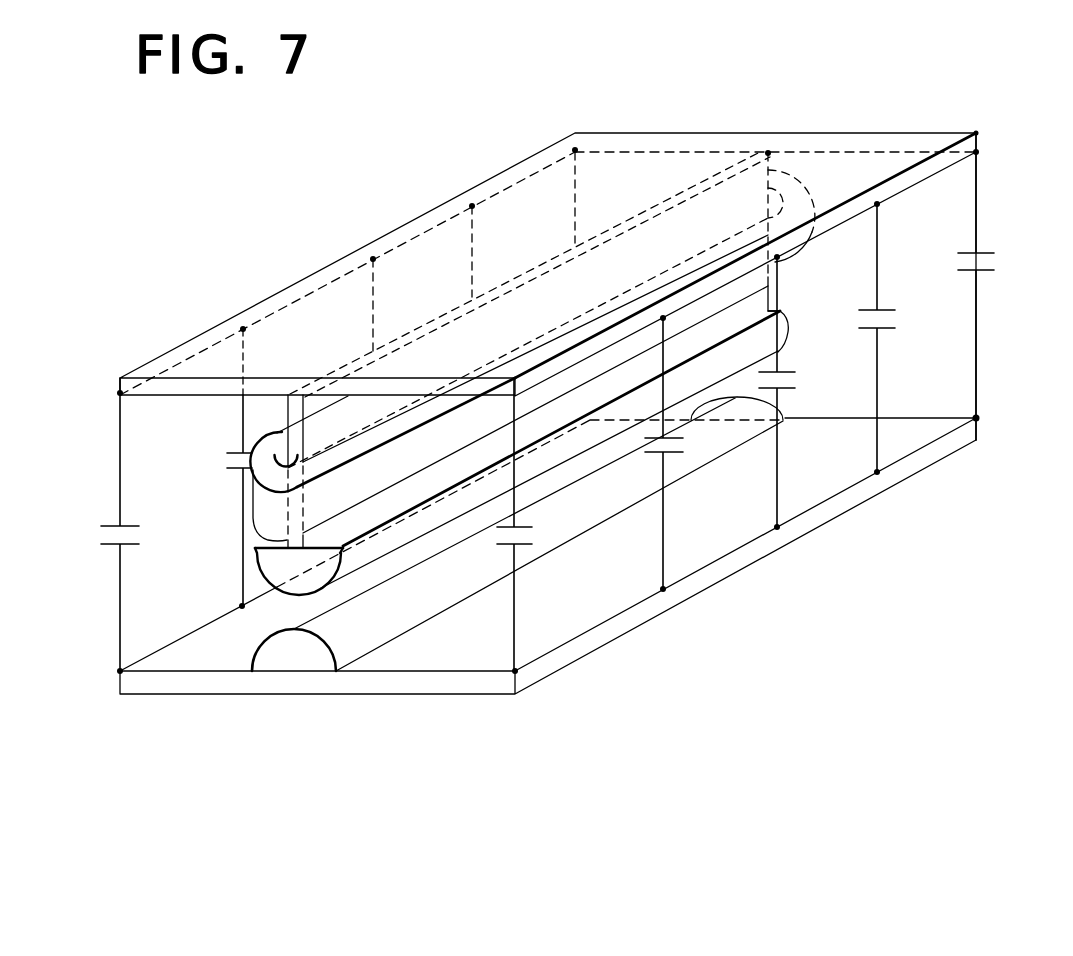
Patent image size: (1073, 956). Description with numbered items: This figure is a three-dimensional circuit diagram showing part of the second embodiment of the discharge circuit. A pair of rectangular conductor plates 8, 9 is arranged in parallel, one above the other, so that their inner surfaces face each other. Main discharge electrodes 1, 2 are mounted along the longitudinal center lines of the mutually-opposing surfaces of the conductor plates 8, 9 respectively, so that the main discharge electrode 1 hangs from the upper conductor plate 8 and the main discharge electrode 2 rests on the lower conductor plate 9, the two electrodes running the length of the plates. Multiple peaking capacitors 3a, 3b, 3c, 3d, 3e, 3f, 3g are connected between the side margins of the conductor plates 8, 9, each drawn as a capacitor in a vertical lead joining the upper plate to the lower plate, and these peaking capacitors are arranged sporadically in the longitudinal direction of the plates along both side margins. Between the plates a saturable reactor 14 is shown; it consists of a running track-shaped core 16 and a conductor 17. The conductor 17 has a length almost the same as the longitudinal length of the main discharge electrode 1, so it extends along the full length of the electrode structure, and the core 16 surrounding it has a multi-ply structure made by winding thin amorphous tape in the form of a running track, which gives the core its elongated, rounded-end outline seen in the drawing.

The main discharge electrode 1 is at (290, 592).
The main discharge electrode 2 is at (295, 653).
The peaking capacitor 3a is at (538, 545).
The peaking capacitor 3b is at (688, 452).
The peaking capacitor 3c is at (797, 390).
The peaking capacitor 3d is at (897, 320).
The peaking capacitor 3e is at (995, 262).
The peaking capacitor 3f is at (101, 537).
The peaking capacitor 3g is at (228, 453).
The conductor plate 8 is at (682, 133).
The conductor plate 9 is at (424, 678).
The saturable reactor 14 is at (287, 432).
The core 16 is at (270, 513).
The conductor 17 is at (281, 432).